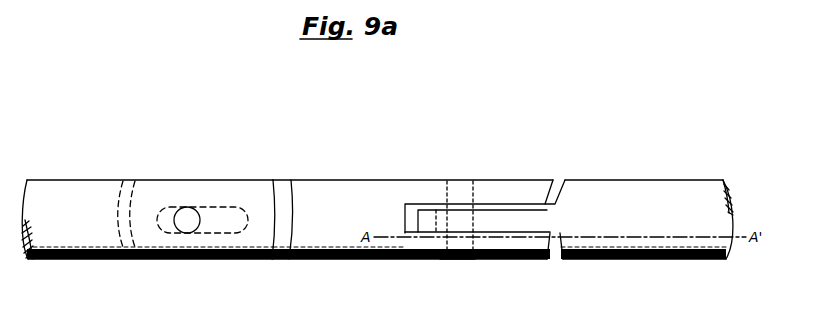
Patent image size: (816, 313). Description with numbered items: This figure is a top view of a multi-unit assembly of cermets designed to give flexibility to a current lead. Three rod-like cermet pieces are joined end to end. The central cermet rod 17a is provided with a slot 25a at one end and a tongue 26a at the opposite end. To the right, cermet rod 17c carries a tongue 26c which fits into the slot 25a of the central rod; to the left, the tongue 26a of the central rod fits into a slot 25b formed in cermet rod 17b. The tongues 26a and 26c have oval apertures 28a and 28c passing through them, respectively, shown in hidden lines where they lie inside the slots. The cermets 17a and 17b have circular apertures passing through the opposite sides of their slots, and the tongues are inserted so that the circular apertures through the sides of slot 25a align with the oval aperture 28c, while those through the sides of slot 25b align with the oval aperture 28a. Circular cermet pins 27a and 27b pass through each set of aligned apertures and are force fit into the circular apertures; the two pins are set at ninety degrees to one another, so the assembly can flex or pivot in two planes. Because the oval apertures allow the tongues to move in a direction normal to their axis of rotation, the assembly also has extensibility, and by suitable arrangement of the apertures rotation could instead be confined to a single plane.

The cermet rod 17a is at (419, 200).
The cermet rod 17b is at (147, 200).
The cermet rod 17c is at (646, 200).
The slot 25a is at (471, 253).
The slot 25b is at (143, 180).
The tongue 26a is at (390, 200).
The tongue 26c is at (482, 256).
The circular cermet pin 27a is at (457, 279).
The circular cermet pin 27b is at (180, 254).
The oval aperture 28a is at (213, 236).
The oval aperture 28c is at (509, 232).